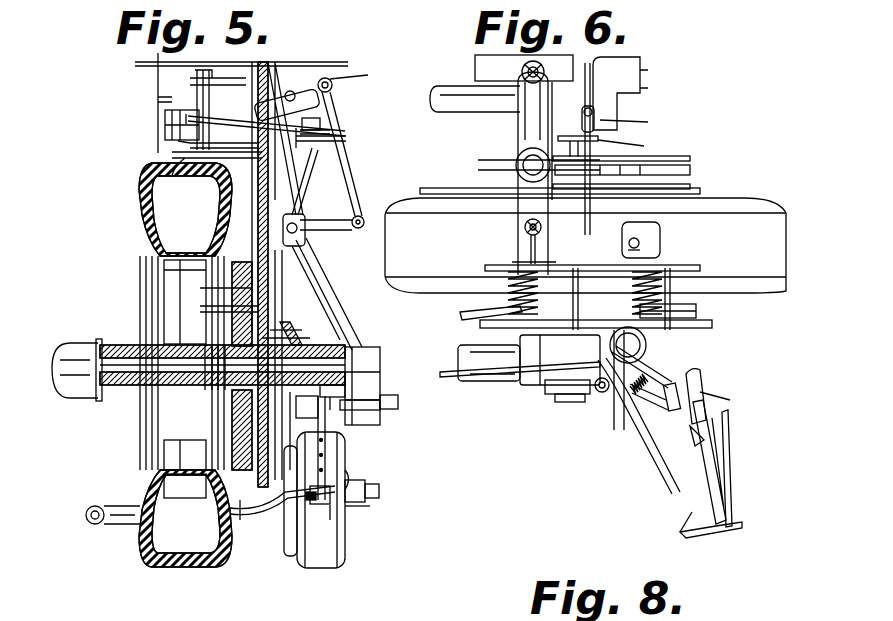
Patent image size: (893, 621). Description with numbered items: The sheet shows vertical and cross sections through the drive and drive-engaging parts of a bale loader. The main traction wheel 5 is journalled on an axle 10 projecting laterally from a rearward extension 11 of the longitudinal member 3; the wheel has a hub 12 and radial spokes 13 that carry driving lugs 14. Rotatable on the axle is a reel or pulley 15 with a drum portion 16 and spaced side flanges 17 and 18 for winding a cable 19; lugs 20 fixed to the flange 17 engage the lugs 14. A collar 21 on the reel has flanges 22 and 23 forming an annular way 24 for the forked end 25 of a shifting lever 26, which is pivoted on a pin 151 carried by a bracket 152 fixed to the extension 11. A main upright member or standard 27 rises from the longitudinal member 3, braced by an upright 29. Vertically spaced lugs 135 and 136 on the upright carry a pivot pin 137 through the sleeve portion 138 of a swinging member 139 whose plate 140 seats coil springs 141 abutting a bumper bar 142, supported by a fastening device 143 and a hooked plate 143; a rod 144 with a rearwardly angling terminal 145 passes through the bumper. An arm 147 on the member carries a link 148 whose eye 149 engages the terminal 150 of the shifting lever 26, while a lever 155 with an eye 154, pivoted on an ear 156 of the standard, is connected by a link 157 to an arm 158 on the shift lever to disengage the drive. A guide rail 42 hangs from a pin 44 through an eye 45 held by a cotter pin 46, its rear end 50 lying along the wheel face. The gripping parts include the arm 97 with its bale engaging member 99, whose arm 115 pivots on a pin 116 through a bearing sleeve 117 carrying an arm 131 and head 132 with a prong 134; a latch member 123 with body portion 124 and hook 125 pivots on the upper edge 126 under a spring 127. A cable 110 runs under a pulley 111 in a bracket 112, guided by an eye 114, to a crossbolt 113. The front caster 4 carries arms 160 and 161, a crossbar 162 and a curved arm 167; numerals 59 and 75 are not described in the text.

In FIG. 6, the longitudinal member 3 is at (448, 88).
In FIG. 5, the front caster 4 is at (340, 560).
In FIG. 5, the main traction wheel 5 is at (150, 565).
In FIG. 5, the axle 10 is at (118, 358).
In FIG. 5, the rearward extension 11 is at (380, 366).
In FIG. 6, the rearward extension 11 is at (480, 55).
In FIG. 5, the hub 12 is at (60, 366).
In FIG. 5, the spokes 13 is at (160, 406).
In FIG. 5, the driving lugs 14 is at (215, 270).
In FIG. 5, the reel or pulley 15 is at (330, 300).
In FIG. 5, the drum portion 16 is at (200, 308).
In FIG. 6, the drum portion 16 is at (690, 170).
In FIG. 5, the side flange 17 is at (222, 242).
In FIG. 6, the side flange 17 is at (690, 186).
In FIG. 5, the side flange 18 is at (296, 258).
In FIG. 6, the side flange 18 is at (690, 158).
In FIG. 5, the cable 19 is at (258, 189).
In FIG. 5, the lugs 20 is at (187, 497).
In FIG. 5, the collar 21 is at (310, 340).
In FIG. 5, the flange 22 is at (299, 409).
In FIG. 5, the flange 23 is at (345, 392).
In FIG. 5, the annular way 24 is at (398, 402).
In FIG. 5, the forked end 25 is at (302, 334).
In FIG. 5, the shifting lever 26 is at (340, 172).
In FIG. 5, the upright member or standard 27 is at (268, 200).
In FIG. 6, the upright member or standard 27 is at (516, 160).
In FIG. 6, the upright 29 is at (522, 70).
In FIG. 5, the guide rail 42 is at (86, 522).
In FIG. 5, the pin 44 is at (325, 445).
In FIG. 5, the eye 45 is at (330, 486).
In FIG. 5, the cotter pin 46 is at (330, 520).
In FIG. 6, the rear end of the guide rail 50 is at (696, 311).
In FIG. 5, the bracket 59 is at (352, 470).
In FIG. 5, the plate 75 is at (212, 288).
In FIG. 6, the longitudinally extending arm 97 is at (664, 372).
In FIG. 6, the bale engaging member 99 is at (722, 530).
In FIG. 6, the cable 110 is at (505, 383).
In FIG. 6, the pulley 111 is at (550, 394).
In FIG. 6, the bracket 112 is at (562, 404).
In FIG. 6, the crossbolt 113 is at (680, 528).
In FIG. 6, the eye 114 is at (598, 400).
In FIG. 6, the arm 115 is at (732, 422).
In FIG. 6, the pin 116 is at (702, 372).
In FIG. 6, the bearing sleeve 117 is at (732, 403).
In FIG. 6, the latch member 123 is at (700, 432).
In FIG. 6, the body portion 124 is at (698, 424).
In FIG. 6, the hook 125 is at (690, 412).
In FIG. 6, the upper edge 126 is at (694, 418).
In FIG. 6, the spring 127 is at (690, 370).
In FIG. 6, the arm 131 is at (706, 388).
In FIG. 6, the head 132 is at (724, 470).
In FIG. 6, the prong 134 is at (690, 446).
In FIG. 5, the lug 135 is at (262, 50).
In FIG. 6, the lug 135 is at (520, 192).
In FIG. 5, the lug 136 is at (172, 156).
In FIG. 5, the pivot pin 137 is at (268, 160).
In FIG. 6, the pivot pin 137 is at (526, 237).
In FIG. 5, the sleeve portion 138 is at (197, 92).
In FIG. 6, the sleeve portion 138 is at (524, 226).
In FIG. 5, the member 139 is at (158, 100).
In FIG. 6, the member 139 is at (512, 260).
In FIG. 5, the plate 140 is at (165, 126).
In FIG. 6, the plate 140 is at (485, 268).
In FIG. 6, the coil springs 141 is at (545, 290).
In FIG. 6, the bumper bar 142 is at (490, 320).
In FIG. 6, the fastening device 143 is at (500, 332).
In FIG. 6, the rod 144 is at (628, 352).
In FIG. 6, the rearwardly angling terminal 145 is at (656, 494).
In FIG. 5, the arm 147 is at (178, 143).
In FIG. 6, the arm 147 is at (640, 246).
In FIG. 5, the link 148 is at (248, 124).
In FIG. 6, the link 148 is at (620, 236).
In FIG. 5, the eye 149 is at (346, 140).
In FIG. 6, the eye 149 is at (632, 119).
In FIG. 5, the terminal 150 is at (330, 132).
In FIG. 6, the terminal 150 is at (617, 112).
In FIG. 5, the pin 151 is at (305, 208).
In FIG. 6, the pin 151 is at (617, 145).
In FIG. 5, the bracket 152 is at (302, 330).
In FIG. 5, the eye 154 is at (278, 92).
In FIG. 5, the lever 155 is at (365, 68).
In FIG. 5, the ear 156 is at (318, 80).
In FIG. 5, the link 157 is at (320, 124).
In FIG. 6, the link 157 is at (596, 56).
In FIG. 5, the arm 158 is at (362, 210).
In FIG. 6, the arm 158 is at (661, 73).
In FIG. 5, the arm 160 is at (370, 500).
In FIG. 5, the arm 161 is at (268, 508).
In FIG. 5, the crossbar 162 is at (379, 486).
In FIG. 5, the arm 167 is at (250, 515).